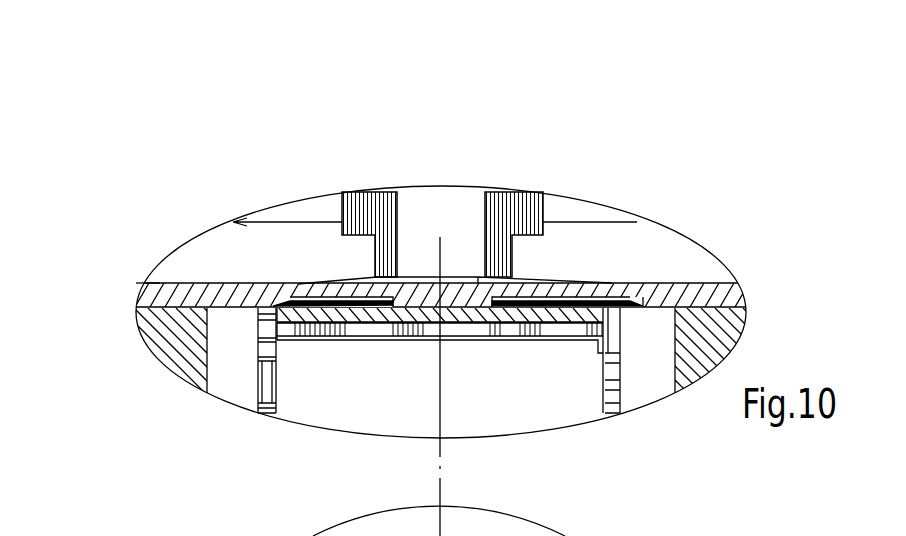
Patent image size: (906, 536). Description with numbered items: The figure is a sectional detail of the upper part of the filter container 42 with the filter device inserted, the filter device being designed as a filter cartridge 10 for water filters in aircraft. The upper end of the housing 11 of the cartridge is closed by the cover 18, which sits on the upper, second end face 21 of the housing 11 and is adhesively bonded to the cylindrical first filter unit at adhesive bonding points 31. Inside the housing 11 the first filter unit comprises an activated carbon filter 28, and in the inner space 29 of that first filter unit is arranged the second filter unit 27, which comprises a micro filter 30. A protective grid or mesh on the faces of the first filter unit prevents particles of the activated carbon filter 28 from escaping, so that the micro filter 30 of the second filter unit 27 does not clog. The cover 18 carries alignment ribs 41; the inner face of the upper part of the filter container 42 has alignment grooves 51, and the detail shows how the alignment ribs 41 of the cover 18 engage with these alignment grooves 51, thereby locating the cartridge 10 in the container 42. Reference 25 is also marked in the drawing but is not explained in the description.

The filter cartridge 10 is at (185, 283).
The housing 11 is at (252, 292).
The cover 18 is at (693, 283).
The second end face 21 is at (618, 261).
The outer ring 25 is at (138, 340).
The second filter unit 27 is at (260, 388).
The activated carbon filter 28 is at (163, 347).
The inner space 29 is at (229, 366).
The micro filter 30 is at (622, 381).
The adhesive bonding points 31 is at (147, 286).
The alignment ribs 41 is at (318, 297).
The filter container 42 is at (612, 222).
The alignment grooves 51 is at (280, 288).